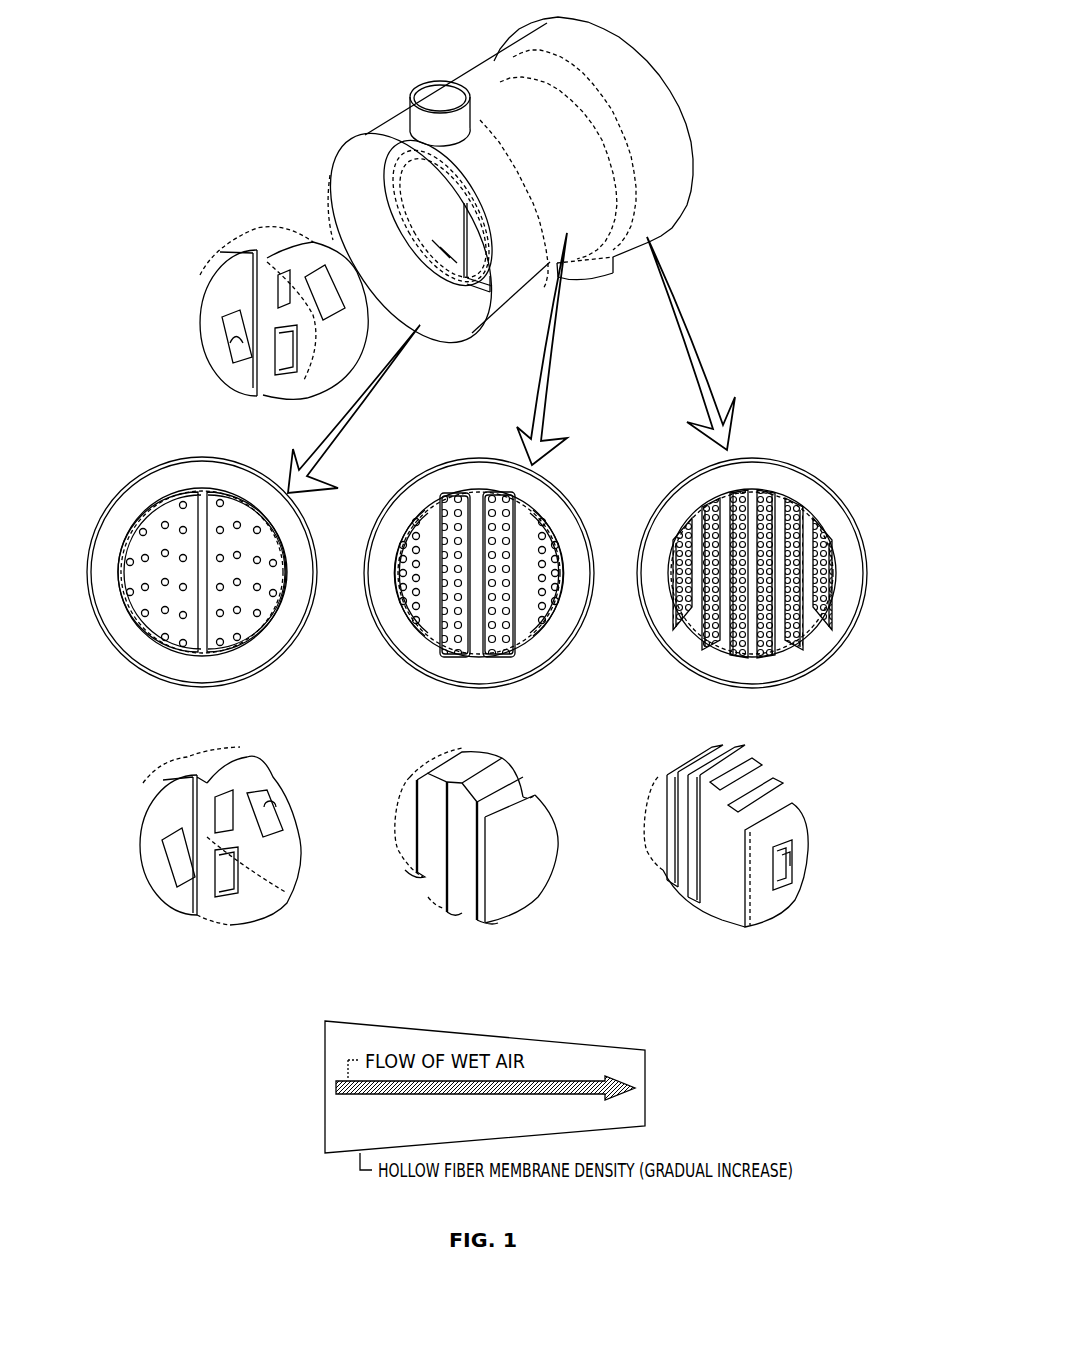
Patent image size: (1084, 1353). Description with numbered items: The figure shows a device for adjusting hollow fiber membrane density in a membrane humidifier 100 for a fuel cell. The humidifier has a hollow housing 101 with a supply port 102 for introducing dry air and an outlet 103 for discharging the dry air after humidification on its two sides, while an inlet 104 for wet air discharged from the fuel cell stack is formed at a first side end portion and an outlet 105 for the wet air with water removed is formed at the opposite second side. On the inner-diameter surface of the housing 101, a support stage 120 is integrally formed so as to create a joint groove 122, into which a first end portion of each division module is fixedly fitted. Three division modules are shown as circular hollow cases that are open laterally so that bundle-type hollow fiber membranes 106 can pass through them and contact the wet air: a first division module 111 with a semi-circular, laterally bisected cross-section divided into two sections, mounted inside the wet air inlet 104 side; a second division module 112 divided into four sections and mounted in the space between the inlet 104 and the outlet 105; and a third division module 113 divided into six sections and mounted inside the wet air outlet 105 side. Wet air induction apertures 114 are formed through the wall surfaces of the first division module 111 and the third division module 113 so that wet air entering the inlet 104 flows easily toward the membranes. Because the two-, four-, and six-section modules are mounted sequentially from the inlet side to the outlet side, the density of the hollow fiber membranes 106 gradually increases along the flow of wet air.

The membrane humidifier 100 is at (352, 100).
The housing 101 is at (500, 93).
The supply port 102 is at (693, 100).
The outlet 103 is at (348, 178).
The inlet 104 is at (426, 97).
The outlet 105 is at (590, 273).
The hollow fiber membrane 106 is at (162, 522).
The first division module 111 is at (270, 218).
The second division module 112 is at (415, 625).
The third division module 113 is at (673, 612).
The wet air induction aperture 114 is at (238, 340).
The support stage 120 is at (489, 300).
The joint groove 122 is at (441, 290).